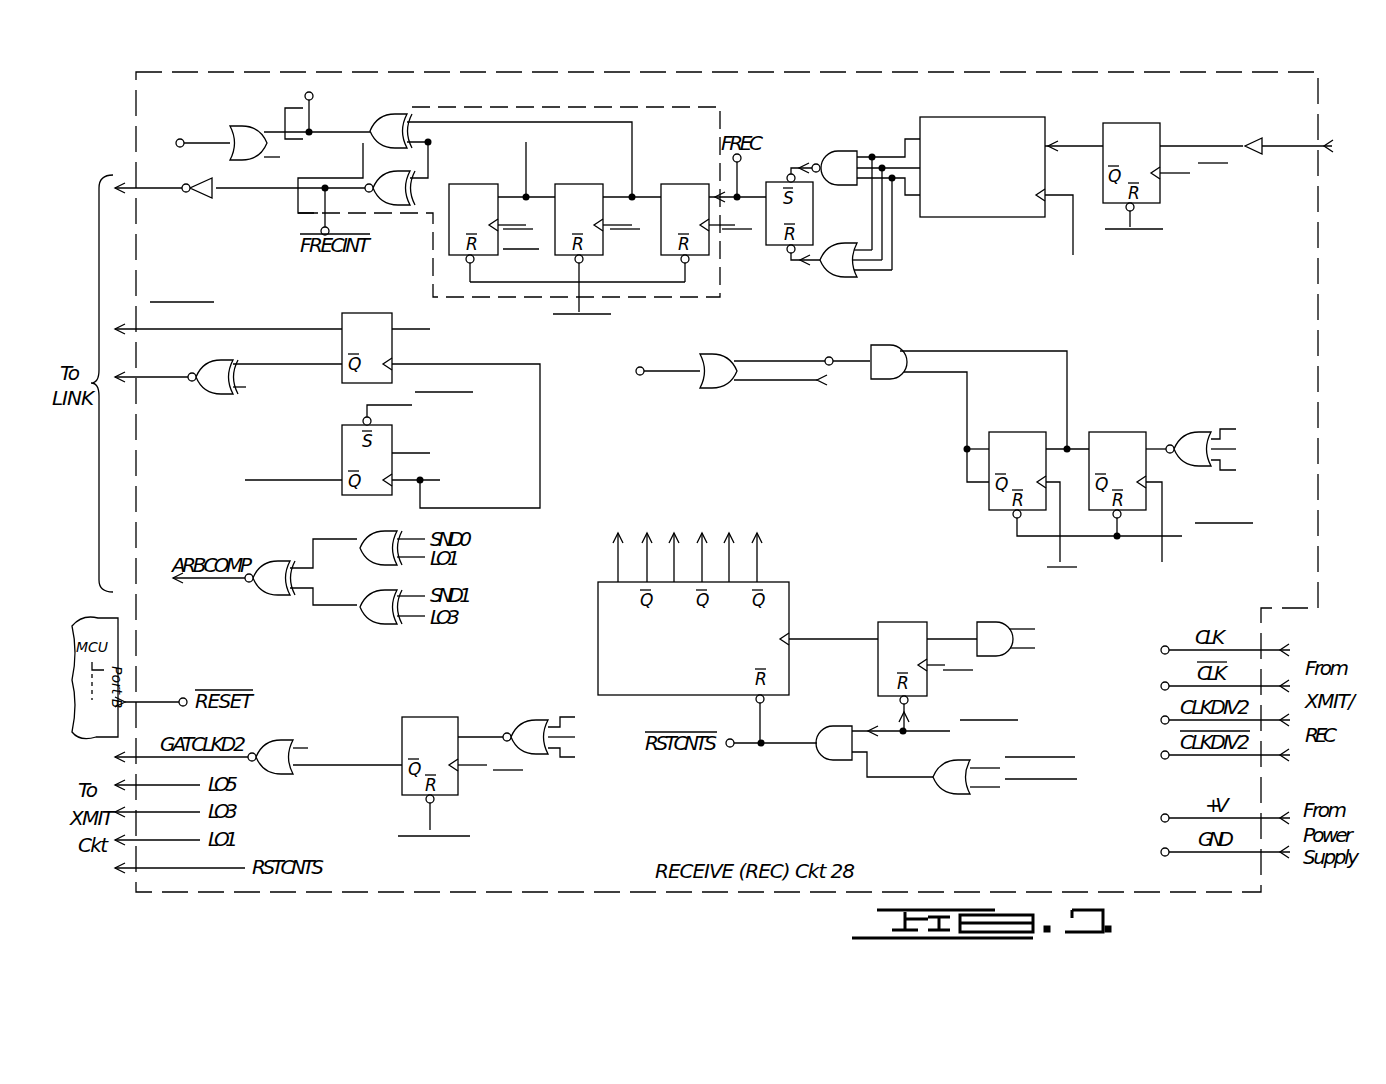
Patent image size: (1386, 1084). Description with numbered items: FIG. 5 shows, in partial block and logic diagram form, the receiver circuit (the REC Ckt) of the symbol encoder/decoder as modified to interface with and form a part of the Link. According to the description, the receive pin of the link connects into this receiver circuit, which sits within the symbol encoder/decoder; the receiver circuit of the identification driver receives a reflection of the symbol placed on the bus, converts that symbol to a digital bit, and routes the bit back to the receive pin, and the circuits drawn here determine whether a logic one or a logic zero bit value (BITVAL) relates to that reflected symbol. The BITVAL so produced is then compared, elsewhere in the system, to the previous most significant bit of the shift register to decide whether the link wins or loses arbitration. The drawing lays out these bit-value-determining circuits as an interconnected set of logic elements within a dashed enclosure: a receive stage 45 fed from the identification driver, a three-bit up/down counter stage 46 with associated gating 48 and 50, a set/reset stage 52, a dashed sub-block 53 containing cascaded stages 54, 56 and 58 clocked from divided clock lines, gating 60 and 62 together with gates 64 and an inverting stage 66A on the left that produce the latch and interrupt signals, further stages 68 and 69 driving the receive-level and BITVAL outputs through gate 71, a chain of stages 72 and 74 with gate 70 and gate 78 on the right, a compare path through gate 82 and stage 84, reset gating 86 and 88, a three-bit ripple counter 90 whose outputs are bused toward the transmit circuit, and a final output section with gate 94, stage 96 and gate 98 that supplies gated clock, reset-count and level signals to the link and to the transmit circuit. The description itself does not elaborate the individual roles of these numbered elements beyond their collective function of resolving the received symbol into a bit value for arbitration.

The receive flip-flop 45 is at (1146, 130).
The 3 bit up/down counter 46 is at (993, 128).
The NAND gate 48 is at (843, 155).
The OR gate 50 is at (840, 277).
The set/reset flip-flop 52 is at (777, 253).
The divider circuit 53 is at (738, 104).
The flip-flop 54 is at (680, 188).
The flip-flop 56 is at (586, 188).
The flip-flop 58 is at (482, 192).
The exclusive OR gate 60 is at (395, 122).
The exclusive NOR gate 62 is at (415, 182).
The OR gate 64 is at (240, 128).
The inverter 66A is at (197, 183).
The receive level flip-flop 68 is at (342, 438).
The flip-flop 69 is at (342, 326).
The NOR gate 70 is at (1196, 438).
The exclusive NOR gate 71 is at (210, 375).
The flip-flop 72 is at (1122, 430).
The flip-flop 74 is at (1018, 430).
The AND gate 78 is at (900, 358).
The AND gate 82 is at (1004, 656).
The flip-flop 84 is at (899, 622).
The OR gate 86 is at (957, 792).
The AND gate 88 is at (830, 750).
The 3 bit ripple counter 90 is at (785, 596).
The NOR gate 94 is at (533, 757).
The flip-flop 96 is at (456, 731).
The NOR gate 98 is at (278, 750).